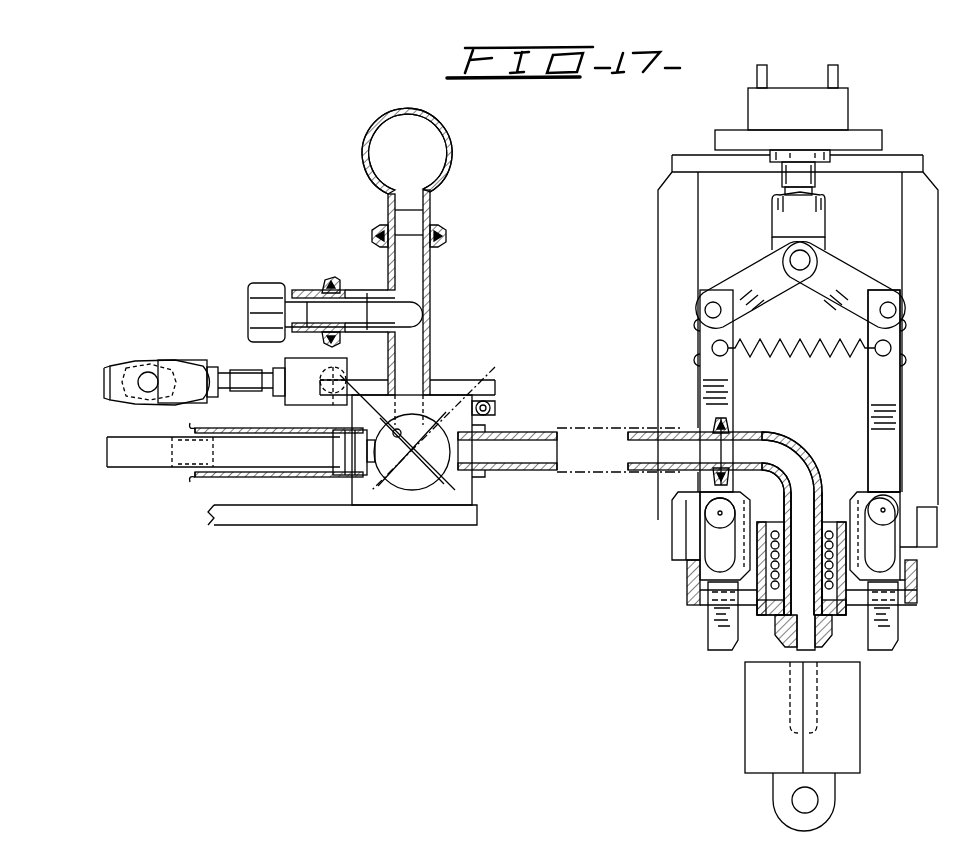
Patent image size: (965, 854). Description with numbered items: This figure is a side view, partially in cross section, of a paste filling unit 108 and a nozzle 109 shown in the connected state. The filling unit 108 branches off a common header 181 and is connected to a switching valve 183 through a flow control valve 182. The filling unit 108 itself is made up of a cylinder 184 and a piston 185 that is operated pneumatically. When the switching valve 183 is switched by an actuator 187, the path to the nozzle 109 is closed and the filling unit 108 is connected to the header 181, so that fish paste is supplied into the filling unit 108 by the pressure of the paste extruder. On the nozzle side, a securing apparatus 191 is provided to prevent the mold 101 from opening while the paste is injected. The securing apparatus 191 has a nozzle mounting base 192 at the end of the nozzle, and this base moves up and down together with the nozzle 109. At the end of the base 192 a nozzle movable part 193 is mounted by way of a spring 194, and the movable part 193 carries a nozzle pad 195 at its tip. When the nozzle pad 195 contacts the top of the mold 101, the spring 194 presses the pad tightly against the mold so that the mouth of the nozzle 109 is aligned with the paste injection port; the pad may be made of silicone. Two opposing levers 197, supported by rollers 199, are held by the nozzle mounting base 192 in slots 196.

The mold 101 is at (843, 702).
The filling unit 108 is at (286, 473).
The nozzle 109 is at (792, 608).
The common header 181 is at (430, 140).
The flow control valve 182 is at (328, 318).
The switching valve 183 is at (410, 490).
The cylinder 184 is at (216, 478).
The piston 185 is at (338, 467).
The actuator 187 is at (186, 366).
The securing apparatus 191 is at (937, 166).
The nozzle mounting base 192 is at (685, 605).
The nozzle movable part 193 is at (832, 632).
The spring 194 is at (830, 528).
The nozzle pad 195 is at (790, 645).
The slot 196 is at (900, 580).
The lever 197 is at (874, 380).
The roller 199 is at (878, 492).